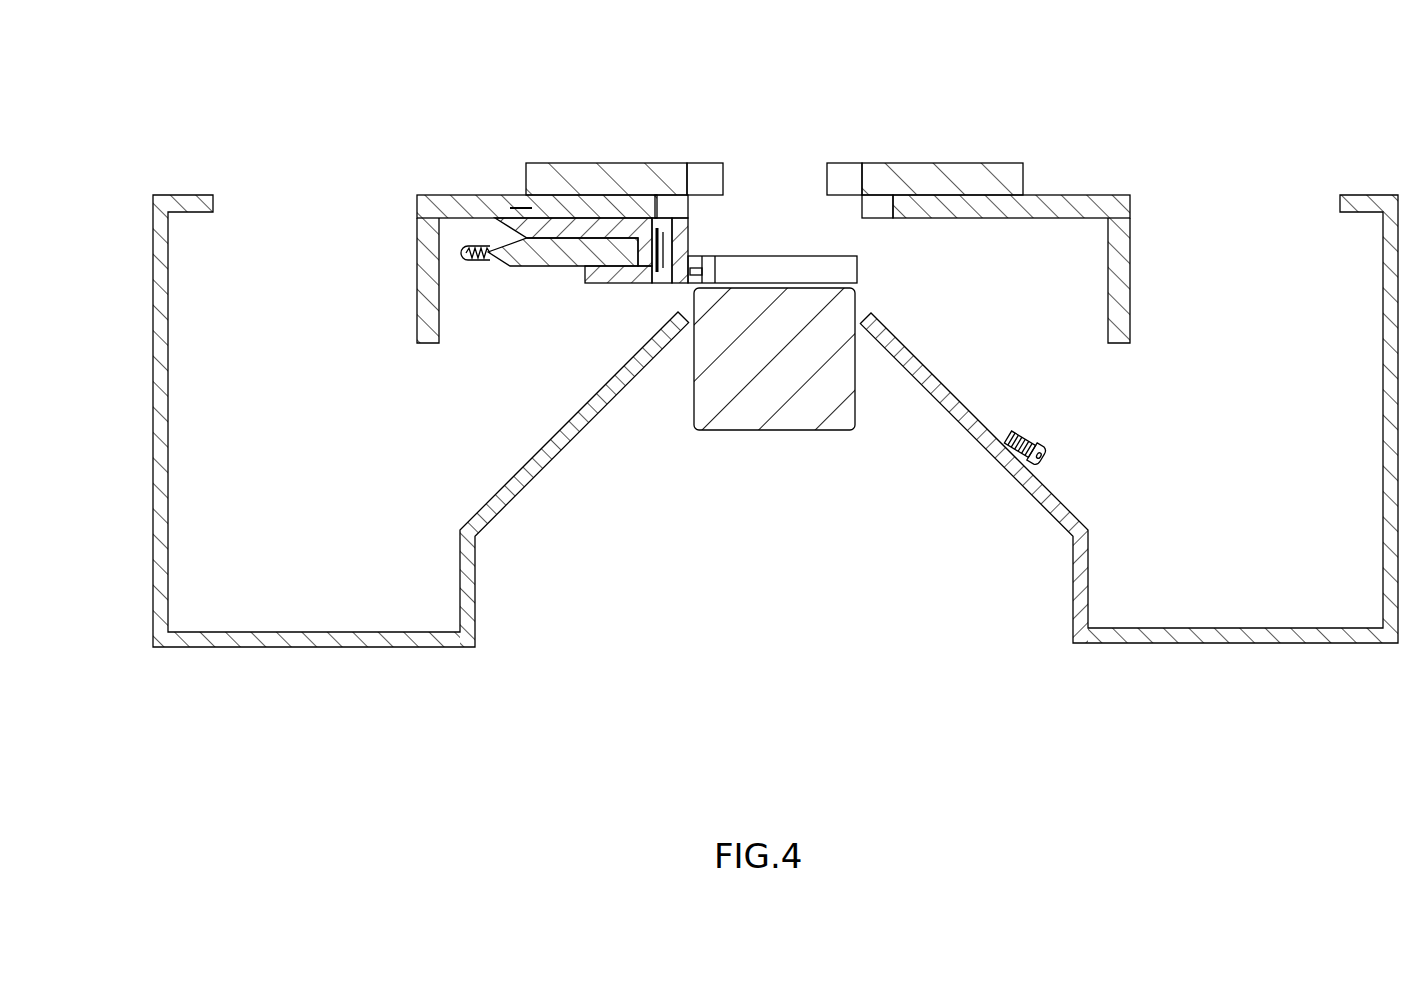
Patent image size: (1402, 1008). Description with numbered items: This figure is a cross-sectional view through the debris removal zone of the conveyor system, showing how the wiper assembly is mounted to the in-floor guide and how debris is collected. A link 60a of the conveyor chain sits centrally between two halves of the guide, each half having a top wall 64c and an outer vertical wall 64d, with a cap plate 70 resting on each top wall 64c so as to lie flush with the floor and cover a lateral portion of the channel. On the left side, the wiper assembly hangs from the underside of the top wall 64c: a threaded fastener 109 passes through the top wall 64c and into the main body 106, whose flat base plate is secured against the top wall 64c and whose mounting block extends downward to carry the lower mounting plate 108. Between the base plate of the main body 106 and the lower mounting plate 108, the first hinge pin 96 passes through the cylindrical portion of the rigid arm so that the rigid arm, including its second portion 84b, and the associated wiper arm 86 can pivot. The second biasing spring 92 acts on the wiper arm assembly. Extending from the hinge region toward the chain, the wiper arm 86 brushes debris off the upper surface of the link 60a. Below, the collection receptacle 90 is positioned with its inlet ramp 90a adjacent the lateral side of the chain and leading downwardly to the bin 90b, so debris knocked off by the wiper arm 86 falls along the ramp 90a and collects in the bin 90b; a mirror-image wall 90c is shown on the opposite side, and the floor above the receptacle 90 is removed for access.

The link 60a is at (788, 430).
The top wall 64c is at (484, 195).
The outer vertical wall 64d is at (417, 298).
The cap plate 70 is at (596, 163).
The second portion 84b is at (528, 266).
The wiper arm 86 is at (766, 256).
The collection receptacle 90 is at (153, 383).
The inlet ramp 90a is at (514, 500).
The bin 90b is at (250, 632).
The inclined wall of housing 90c is at (1057, 494).
The second biasing spring 92 is at (472, 246).
The first hinge pin 96 is at (663, 218).
The main body 106 is at (614, 218).
The lower mounting plate 108 is at (612, 283).
The threaded fastener 109 is at (551, 200).